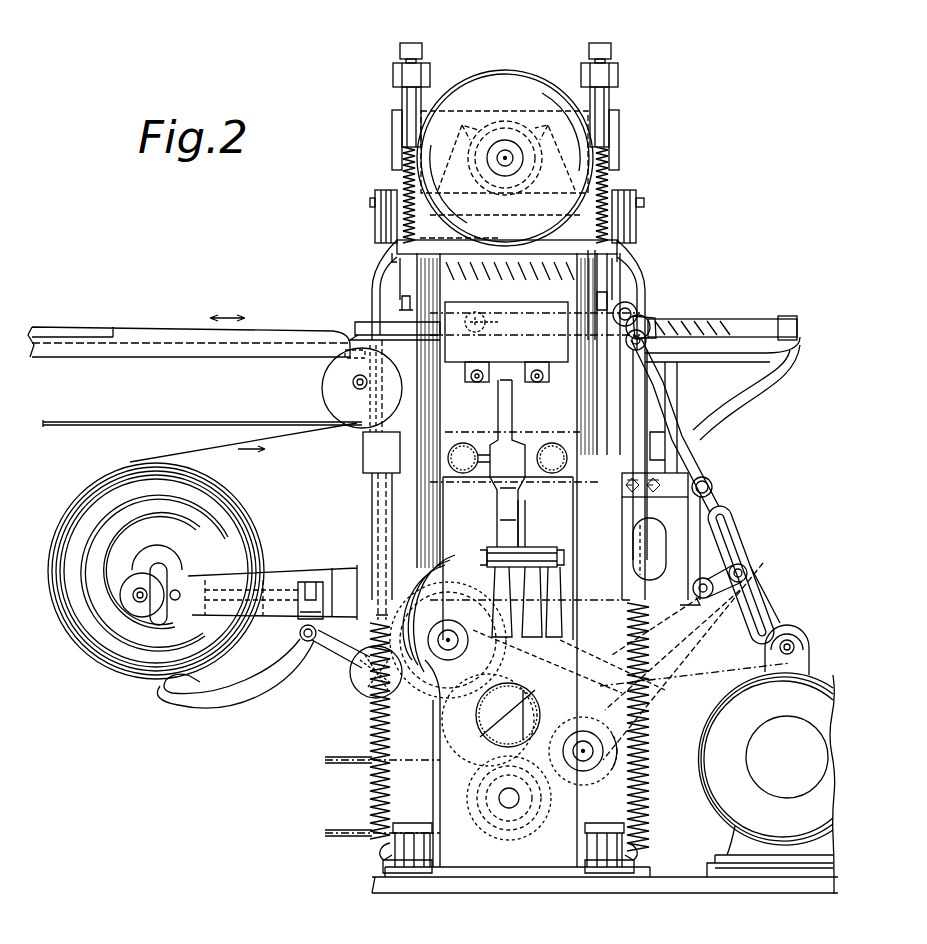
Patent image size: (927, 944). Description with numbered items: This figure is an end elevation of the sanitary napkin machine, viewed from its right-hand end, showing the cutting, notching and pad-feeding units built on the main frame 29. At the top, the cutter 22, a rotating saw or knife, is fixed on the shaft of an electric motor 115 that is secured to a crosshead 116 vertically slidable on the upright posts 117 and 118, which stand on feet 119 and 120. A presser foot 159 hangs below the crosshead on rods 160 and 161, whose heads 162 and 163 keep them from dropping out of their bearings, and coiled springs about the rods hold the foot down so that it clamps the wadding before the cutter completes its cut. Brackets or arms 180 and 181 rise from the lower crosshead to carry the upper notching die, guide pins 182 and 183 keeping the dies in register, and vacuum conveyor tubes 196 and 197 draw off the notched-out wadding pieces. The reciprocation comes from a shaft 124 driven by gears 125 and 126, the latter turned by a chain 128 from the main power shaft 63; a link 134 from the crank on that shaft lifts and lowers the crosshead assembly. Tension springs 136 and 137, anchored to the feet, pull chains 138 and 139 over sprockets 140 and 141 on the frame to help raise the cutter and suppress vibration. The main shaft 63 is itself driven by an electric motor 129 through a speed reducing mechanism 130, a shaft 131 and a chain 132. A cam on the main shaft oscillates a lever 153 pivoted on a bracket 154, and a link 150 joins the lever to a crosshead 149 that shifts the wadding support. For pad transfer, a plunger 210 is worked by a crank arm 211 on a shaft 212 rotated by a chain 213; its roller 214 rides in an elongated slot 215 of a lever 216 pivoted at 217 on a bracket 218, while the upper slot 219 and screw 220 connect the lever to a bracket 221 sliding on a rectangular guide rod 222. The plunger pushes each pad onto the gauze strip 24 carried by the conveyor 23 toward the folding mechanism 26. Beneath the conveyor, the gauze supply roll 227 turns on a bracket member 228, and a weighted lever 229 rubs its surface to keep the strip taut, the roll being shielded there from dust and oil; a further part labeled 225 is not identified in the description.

The cutter 22 is at (520, 77).
The crosshead 116 is at (518, 114).
The electric motor 115 is at (480, 169).
The head 162 is at (411, 43).
The head 163 is at (600, 43).
The post 117 is at (400, 98).
The post 118 is at (612, 103).
The rod 160 is at (403, 186).
The rod 161 is at (609, 186).
The bracket or arm 180 is at (377, 244).
The bracket or arm 181 is at (636, 257).
The guide pin 182 is at (430, 266).
The guide pin 183 is at (642, 268).
The presser foot or shoe 159 is at (505, 260).
The plunger 210 is at (506, 332).
The link 150 is at (495, 383).
The crosshead 149 is at (528, 383).
The lever 153 is at (497, 521).
The vacuum conveyor tube 196 is at (470, 473).
The vacuum conveyor tube 197 is at (551, 473).
The link 134 is at (520, 532).
The bracket 154 is at (538, 558).
The main power shaft 63 is at (452, 628).
The gear 126 is at (508, 715).
The chain 128 is at (488, 735).
The main frame 29 is at (606, 802).
The gear 125 is at (520, 808).
The shaft 124 is at (514, 812).
The tension spring 136 is at (372, 737).
The foot 119 is at (388, 855).
The foot 120 is at (632, 852).
The folding mechanism 26 is at (77, 329).
The bracket 225 is at (360, 323).
The sprocket 140 is at (362, 388).
The conveyor 23 is at (185, 425).
The strip of gauze 24 is at (291, 443).
The supply roll 227 is at (120, 473).
The bracket member 228 is at (340, 574).
The weighted lever 229 is at (248, 688).
The chain 138 is at (372, 521).
The rectangular guide rod 222 is at (757, 316).
The sprocket 141 is at (666, 375).
The elongated slot 219 is at (637, 314).
The screw 220 is at (656, 329).
The bracket 221 is at (655, 340).
The lever 216 is at (703, 461).
The pivot 217 is at (712, 486).
The bracket 218 is at (678, 497).
The chain 139 is at (644, 568).
The elongated slot 215 is at (735, 530).
The crank arm 211 is at (746, 565).
The roller 214 is at (716, 577).
The shaft 131 is at (790, 640).
The speed reducing mechanism 130 is at (815, 650).
The rotating shaft 212 is at (690, 618).
The chain 132 is at (737, 676).
The chain 213 is at (680, 695).
The tension spring 137 is at (630, 743).
The electric motor 129 is at (768, 714).